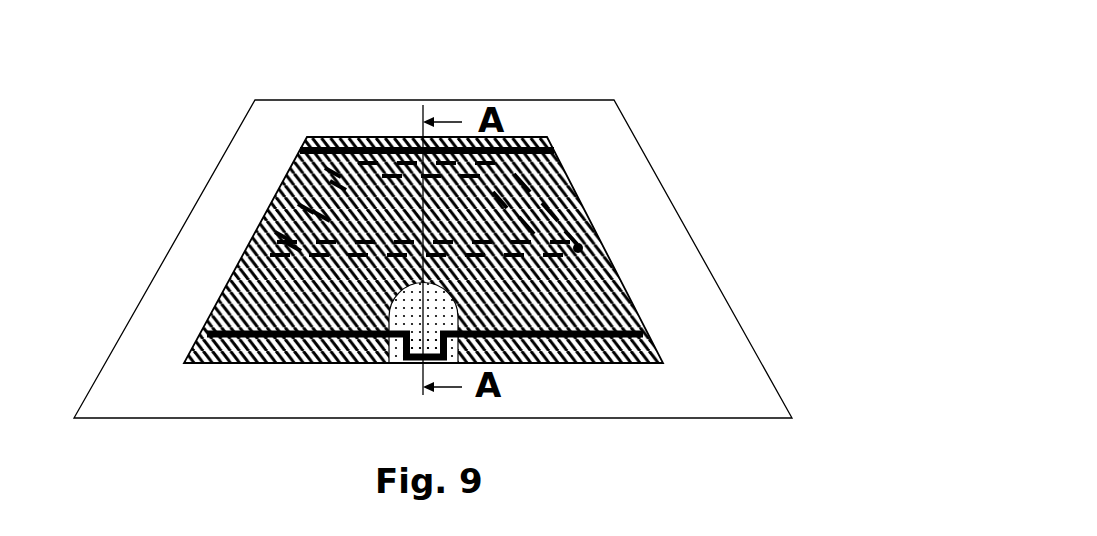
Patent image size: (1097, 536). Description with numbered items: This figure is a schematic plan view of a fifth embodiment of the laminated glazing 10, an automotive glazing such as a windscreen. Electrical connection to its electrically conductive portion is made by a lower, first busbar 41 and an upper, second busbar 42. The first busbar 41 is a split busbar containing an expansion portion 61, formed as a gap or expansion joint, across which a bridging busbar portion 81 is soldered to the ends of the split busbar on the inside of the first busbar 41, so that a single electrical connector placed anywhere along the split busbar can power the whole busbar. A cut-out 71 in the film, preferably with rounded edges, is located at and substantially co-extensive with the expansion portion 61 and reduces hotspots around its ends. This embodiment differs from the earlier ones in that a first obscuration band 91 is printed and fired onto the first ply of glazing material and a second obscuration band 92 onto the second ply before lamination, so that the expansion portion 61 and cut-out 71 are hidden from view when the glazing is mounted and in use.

The laminated glazing 10 is at (648, 93).
The second busbar 42 is at (303, 152).
The first busbar 41 is at (207, 334).
The cut-out 71 is at (388, 321).
The expansion portion 61 is at (433, 331).
The bridging busbar portion 81 is at (460, 362).
The first obscuration band 91 is at (268, 242).
The second obscuration band 92 is at (345, 238).